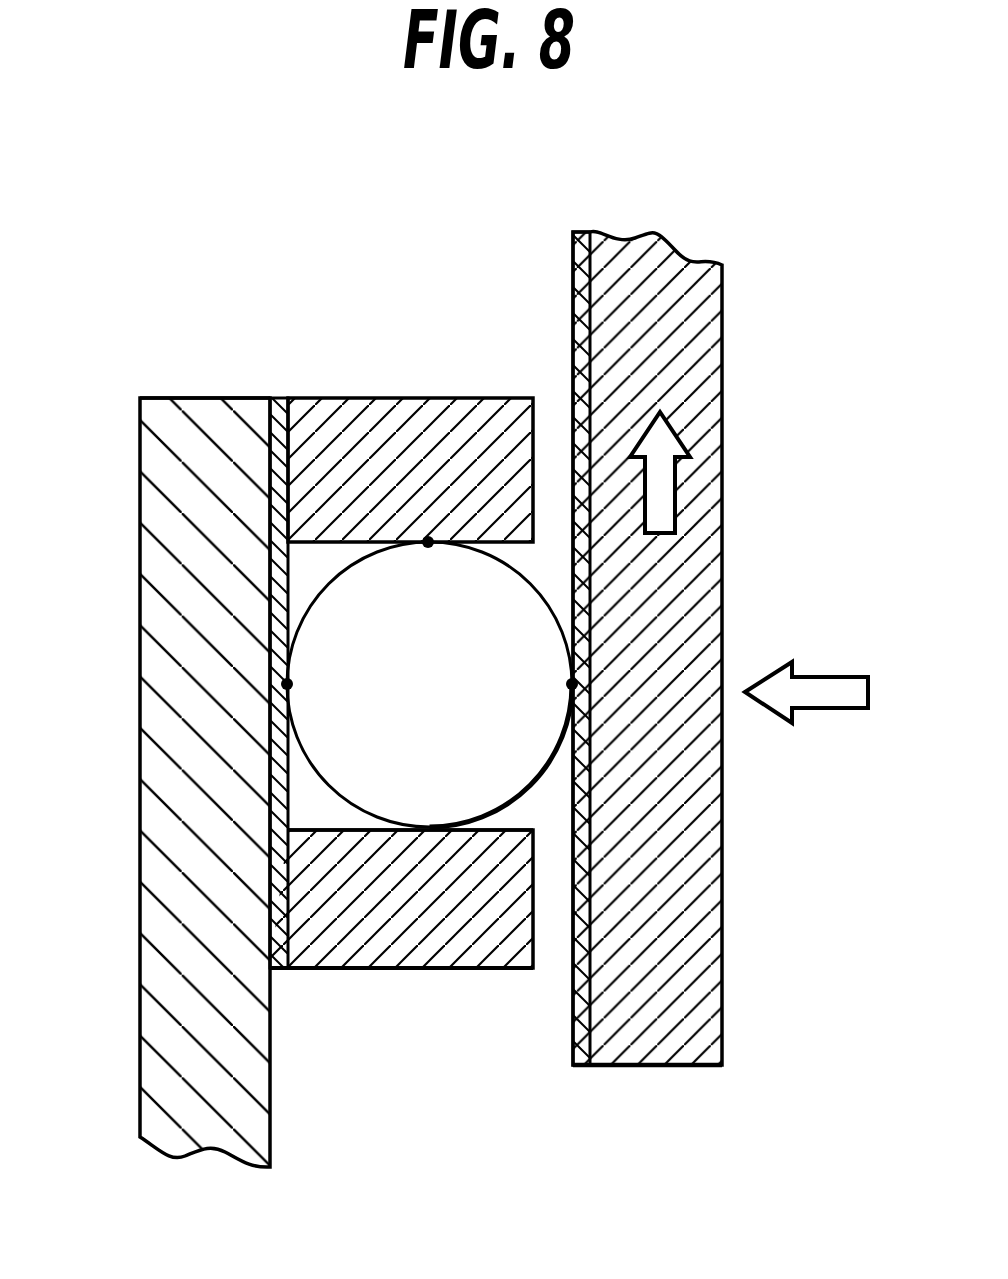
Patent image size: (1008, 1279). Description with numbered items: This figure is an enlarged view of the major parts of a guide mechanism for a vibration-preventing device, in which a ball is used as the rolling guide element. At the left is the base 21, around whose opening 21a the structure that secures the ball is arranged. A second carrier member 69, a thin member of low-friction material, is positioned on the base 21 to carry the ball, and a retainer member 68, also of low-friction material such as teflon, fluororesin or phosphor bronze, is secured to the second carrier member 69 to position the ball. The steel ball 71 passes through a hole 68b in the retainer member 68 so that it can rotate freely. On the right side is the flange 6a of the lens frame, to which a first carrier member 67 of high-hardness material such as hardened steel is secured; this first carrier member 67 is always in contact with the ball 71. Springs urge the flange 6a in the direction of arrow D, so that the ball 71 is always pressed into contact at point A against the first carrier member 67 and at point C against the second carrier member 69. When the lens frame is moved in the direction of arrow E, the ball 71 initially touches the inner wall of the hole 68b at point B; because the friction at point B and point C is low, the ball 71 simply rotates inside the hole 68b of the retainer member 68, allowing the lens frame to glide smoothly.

The base 21 is at (152, 1040).
The opening of the base 21a is at (217, 398).
The second carrier member 69 is at (290, 452).
The retainer member 68 is at (408, 943).
The hole of the retainer member 68b is at (303, 830).
The ball 71 is at (437, 793).
The flange 6a is at (702, 940).
The first carrier member 67 is at (582, 1038).
The contact point A is at (572, 684).
The contact point B is at (428, 542).
The contact point C is at (287, 684).
The direction of spring force D is at (824, 693).
The direction of lens frame movement E is at (699, 472).